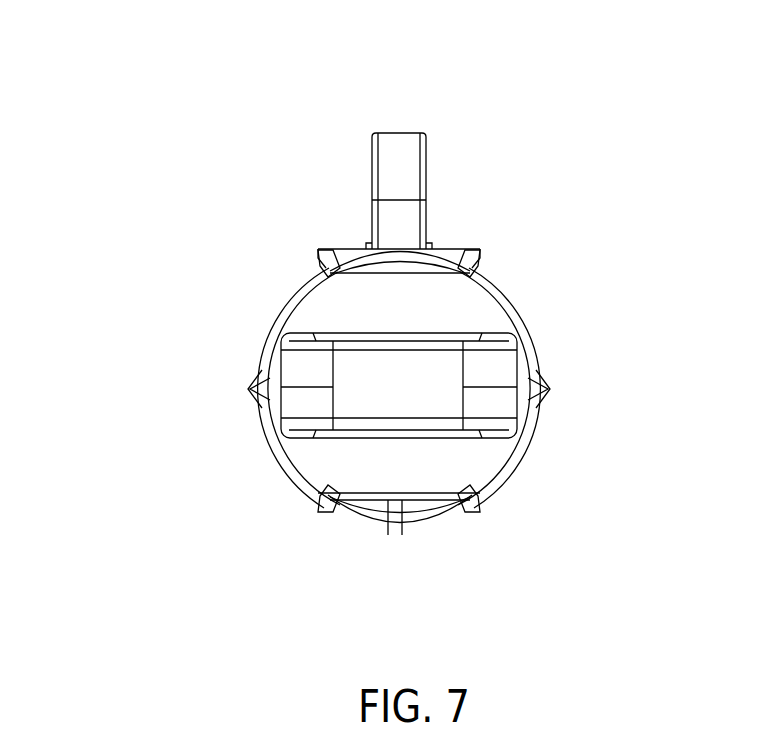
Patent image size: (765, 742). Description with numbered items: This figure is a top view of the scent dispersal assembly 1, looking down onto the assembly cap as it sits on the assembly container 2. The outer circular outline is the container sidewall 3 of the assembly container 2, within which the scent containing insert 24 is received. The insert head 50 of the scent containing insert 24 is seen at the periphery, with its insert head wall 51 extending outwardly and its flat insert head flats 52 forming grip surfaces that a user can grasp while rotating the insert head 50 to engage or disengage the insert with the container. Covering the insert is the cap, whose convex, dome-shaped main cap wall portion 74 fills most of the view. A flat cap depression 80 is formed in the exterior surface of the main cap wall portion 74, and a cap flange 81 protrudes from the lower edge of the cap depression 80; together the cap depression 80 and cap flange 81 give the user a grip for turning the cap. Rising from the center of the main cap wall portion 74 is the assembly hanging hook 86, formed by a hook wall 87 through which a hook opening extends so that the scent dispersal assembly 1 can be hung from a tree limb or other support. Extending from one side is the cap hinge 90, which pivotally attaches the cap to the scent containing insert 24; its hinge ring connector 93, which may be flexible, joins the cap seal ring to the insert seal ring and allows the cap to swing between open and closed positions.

The scent dispersal assembly 1 is at (193, 233).
The assembly container 2 is at (265, 322).
The container sidewall 3 is at (284, 300).
The scent containing insert 24 is at (237, 356).
The insert head 50 is at (243, 378).
The insert head wall 51 is at (552, 373).
The insert head flats 52 is at (450, 244).
The main cap wall portion 74 is at (470, 458).
The cap depression 80 is at (365, 247).
The cap flange 81 is at (397, 250).
The assembly hanging hook 86 is at (474, 333).
The hook wall 87 is at (390, 375).
The cap hinge 90 is at (406, 128).
The hinge ring connector 93 is at (400, 167).